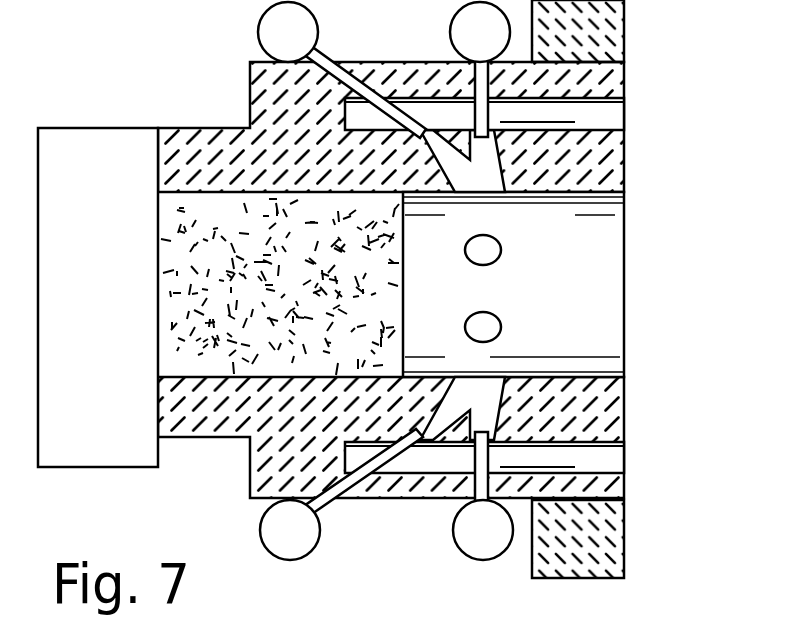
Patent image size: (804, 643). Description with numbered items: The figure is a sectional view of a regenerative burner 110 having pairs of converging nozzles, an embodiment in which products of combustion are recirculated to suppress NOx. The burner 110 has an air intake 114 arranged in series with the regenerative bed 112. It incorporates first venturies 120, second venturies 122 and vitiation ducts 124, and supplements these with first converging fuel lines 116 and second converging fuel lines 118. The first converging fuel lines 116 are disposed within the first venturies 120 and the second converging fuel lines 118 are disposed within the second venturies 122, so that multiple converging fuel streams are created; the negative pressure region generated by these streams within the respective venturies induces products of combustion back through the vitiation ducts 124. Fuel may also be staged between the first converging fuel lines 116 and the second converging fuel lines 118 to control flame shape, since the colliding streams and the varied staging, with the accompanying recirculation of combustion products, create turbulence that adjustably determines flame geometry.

The burner 110 is at (157, 98).
The regenerative bed 112 is at (168, 297).
The air intake 114 is at (85, 450).
The first converging fuel lines 116 is at (398, 100).
The second converging fuel lines 118 is at (470, 107).
The first venturies 120 is at (463, 192).
The second venturies 122 is at (498, 192).
The vitiation ducts 124 is at (612, 117).